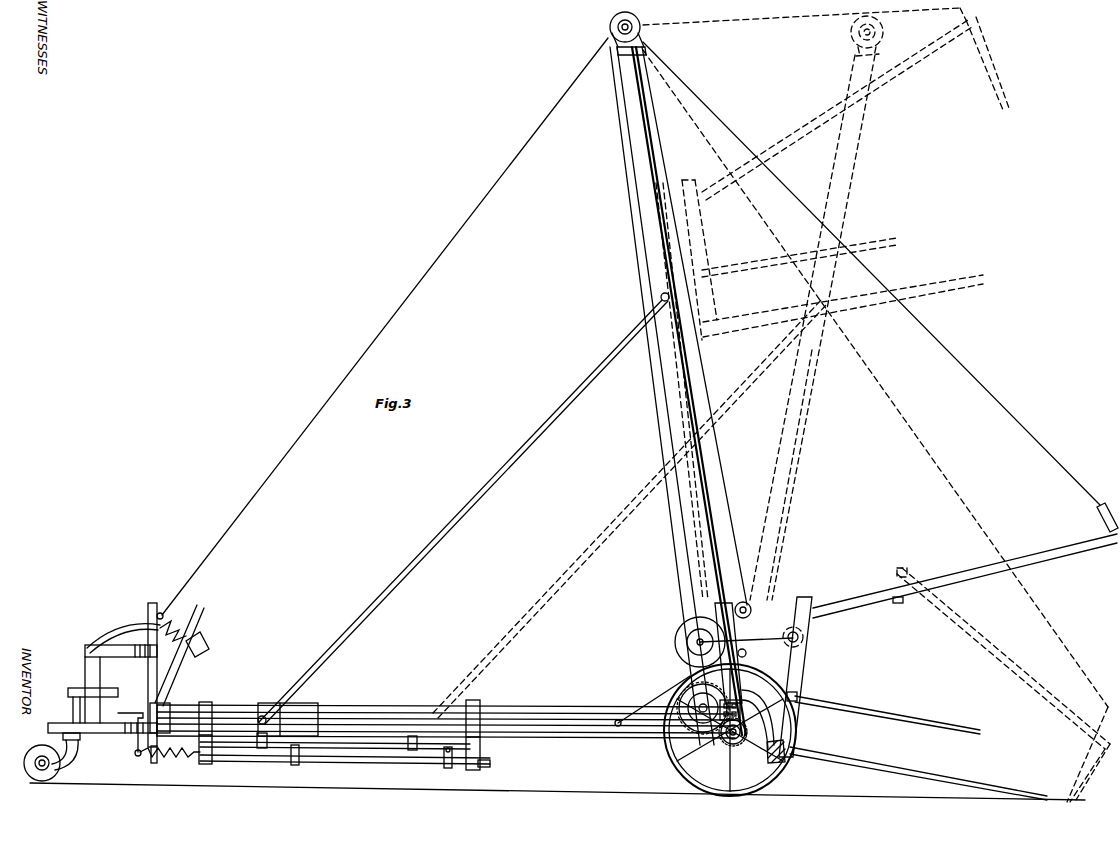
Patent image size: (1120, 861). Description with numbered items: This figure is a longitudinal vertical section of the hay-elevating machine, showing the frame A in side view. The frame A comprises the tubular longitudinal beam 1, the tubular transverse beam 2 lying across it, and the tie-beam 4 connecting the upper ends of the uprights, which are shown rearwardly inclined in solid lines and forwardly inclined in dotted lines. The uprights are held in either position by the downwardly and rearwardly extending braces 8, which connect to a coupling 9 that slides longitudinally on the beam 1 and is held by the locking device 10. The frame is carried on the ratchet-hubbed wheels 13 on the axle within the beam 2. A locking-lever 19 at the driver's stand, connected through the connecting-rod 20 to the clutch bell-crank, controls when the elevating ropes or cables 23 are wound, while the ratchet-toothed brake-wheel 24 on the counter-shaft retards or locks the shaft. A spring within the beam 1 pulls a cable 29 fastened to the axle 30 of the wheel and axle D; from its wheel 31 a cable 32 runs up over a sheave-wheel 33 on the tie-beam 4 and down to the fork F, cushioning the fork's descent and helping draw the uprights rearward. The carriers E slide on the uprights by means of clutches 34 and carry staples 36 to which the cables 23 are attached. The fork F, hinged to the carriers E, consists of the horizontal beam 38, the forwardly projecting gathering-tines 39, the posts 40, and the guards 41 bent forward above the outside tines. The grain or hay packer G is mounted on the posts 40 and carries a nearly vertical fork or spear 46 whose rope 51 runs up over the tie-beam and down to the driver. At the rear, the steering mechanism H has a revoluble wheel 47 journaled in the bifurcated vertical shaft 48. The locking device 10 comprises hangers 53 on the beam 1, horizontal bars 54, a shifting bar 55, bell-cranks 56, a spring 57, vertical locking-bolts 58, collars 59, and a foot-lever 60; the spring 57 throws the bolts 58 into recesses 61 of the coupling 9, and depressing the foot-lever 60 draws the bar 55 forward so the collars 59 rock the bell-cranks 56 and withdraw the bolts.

The longitudinal beam 1 is at (446, 739).
The transverse beam 2 is at (692, 512).
The tie-beam 4 is at (618, 66).
The braces 8 is at (464, 508).
The coupling 9 is at (281, 711).
The locking device 10 is at (345, 770).
The wheels 13 is at (731, 730).
The locking-lever 19 is at (203, 609).
The connecting-rod 20 is at (446, 700).
The elevating ropes or cables 23 is at (708, 438).
The brake-wheel 24 is at (715, 739).
The cable 29 is at (672, 705).
The axle 30 is at (680, 657).
The wheel 31 is at (688, 622).
The cable 32 is at (730, 462).
The sheave-wheel 33 is at (710, 548).
The clutches 34 is at (743, 601).
The staples 36 is at (746, 644).
The horizontal beam 38 is at (793, 745).
The gathering-tines 39 is at (918, 773).
The posts 40 is at (796, 669).
The guards 41 is at (883, 713).
The fork or spear 46 is at (1107, 544).
The revoluble wheel 47 is at (50, 763).
The vertical shaft 48 is at (74, 751).
The rope 51 is at (419, 288).
The hangers 53 is at (207, 702).
The horizontal bars 54 is at (335, 745).
The shifting bar 55 is at (486, 772).
The bell-cranks 56 is at (346, 761).
The spring 57 is at (170, 764).
The locking-bolts 58 is at (315, 755).
The collars 59 is at (432, 762).
The foot-lever 60 is at (130, 726).
The recesses 61 is at (275, 712).
The frame A is at (446, 740).
The wheel and axle D is at (676, 640).
The carriers E is at (715, 605).
The fork F is at (806, 661).
The grain or hay packer G is at (965, 576).
The steering mechanism H is at (102, 675).